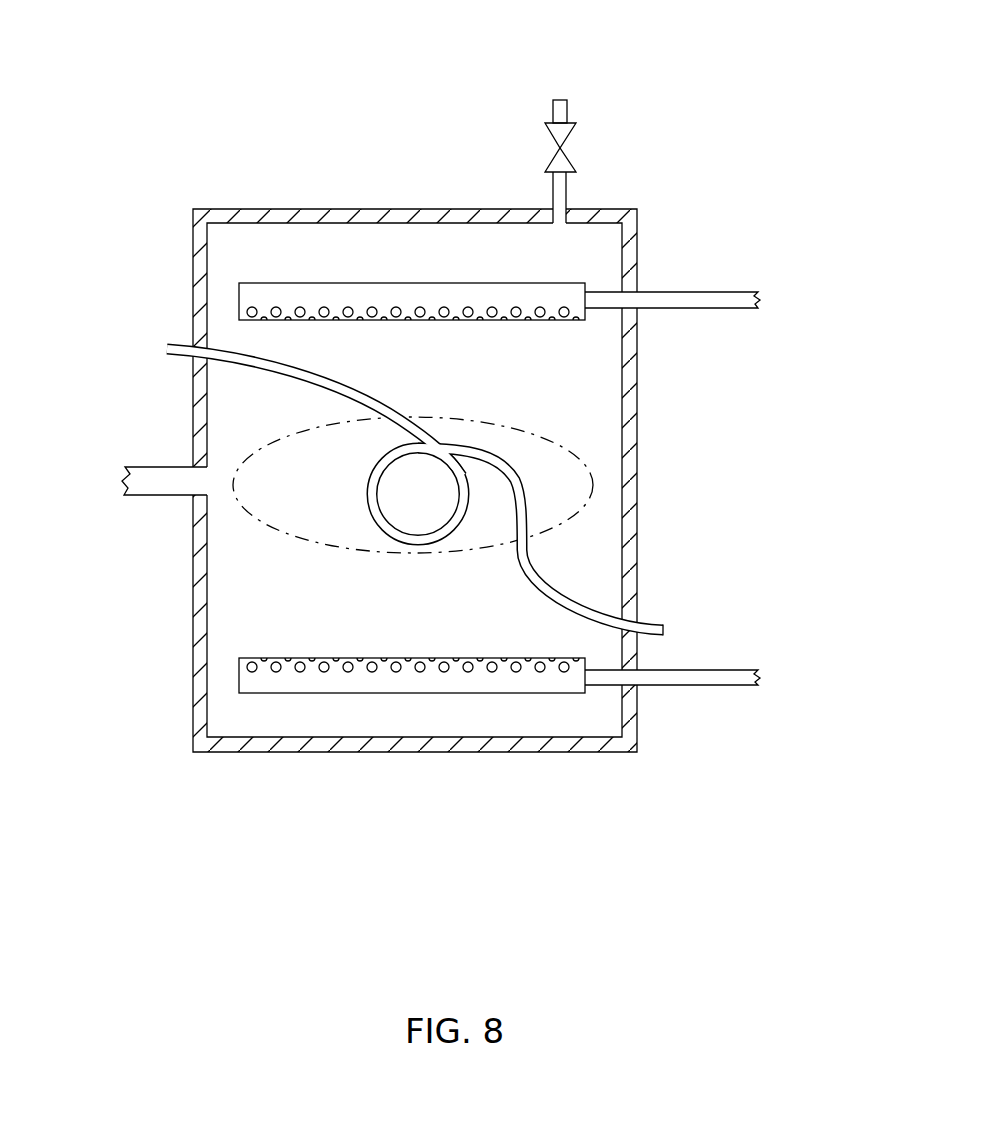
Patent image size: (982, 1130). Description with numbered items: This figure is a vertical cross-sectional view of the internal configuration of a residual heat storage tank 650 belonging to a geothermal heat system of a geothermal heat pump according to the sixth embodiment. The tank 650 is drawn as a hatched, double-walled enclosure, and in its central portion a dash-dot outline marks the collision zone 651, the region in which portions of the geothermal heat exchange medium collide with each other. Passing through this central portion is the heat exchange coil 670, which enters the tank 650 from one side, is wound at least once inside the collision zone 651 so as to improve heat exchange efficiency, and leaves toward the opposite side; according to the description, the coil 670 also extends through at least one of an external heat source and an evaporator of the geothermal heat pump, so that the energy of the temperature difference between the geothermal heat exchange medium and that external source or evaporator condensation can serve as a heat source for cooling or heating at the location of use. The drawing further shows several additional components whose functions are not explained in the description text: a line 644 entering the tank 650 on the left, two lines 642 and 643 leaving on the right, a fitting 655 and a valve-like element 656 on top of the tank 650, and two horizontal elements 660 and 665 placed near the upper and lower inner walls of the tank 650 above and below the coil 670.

The residual heat storage tank 650 is at (307, 212).
The collision zone 651 is at (580, 460).
The outlet pipe 642 is at (667, 293).
The outlet pipe 643 is at (675, 672).
The inlet pipe 644 is at (163, 475).
The valve stem 655 is at (560, 100).
The valve 656 is at (570, 163).
The upper tray 660 is at (388, 293).
The lower tray 665 is at (390, 690).
The heat exchange coil 670 is at (372, 508).